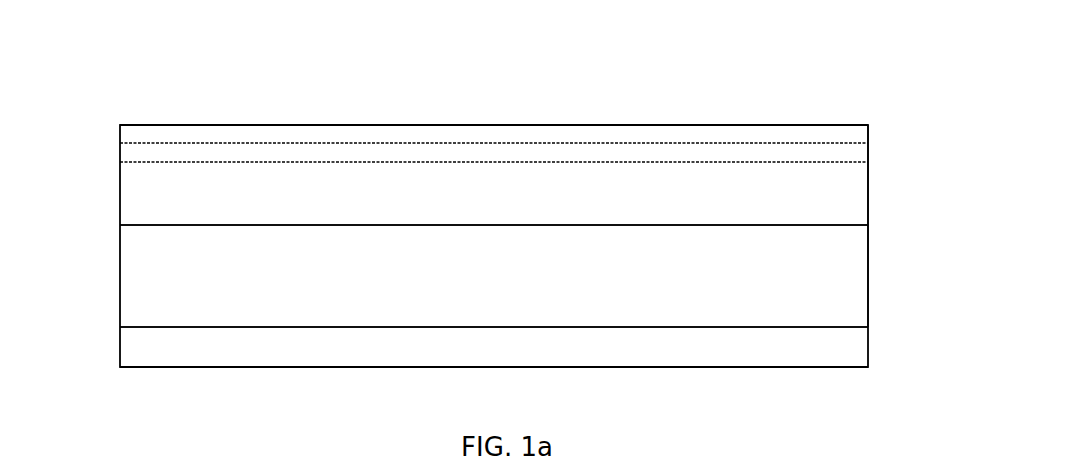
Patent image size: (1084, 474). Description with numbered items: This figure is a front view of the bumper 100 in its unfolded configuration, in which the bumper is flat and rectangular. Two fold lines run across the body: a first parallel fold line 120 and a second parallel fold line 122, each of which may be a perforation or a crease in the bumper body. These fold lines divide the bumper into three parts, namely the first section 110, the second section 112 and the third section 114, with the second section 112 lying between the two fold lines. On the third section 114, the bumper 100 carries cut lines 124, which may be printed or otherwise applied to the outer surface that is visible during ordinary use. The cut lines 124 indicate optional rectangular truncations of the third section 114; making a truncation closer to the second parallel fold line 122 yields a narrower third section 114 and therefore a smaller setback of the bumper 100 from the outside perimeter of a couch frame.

The bumper 100 is at (502, 38).
The first section 110 is at (868, 345).
The second section 112 is at (868, 273).
The third section 114 is at (868, 171).
The first parallel fold line 120 is at (120, 327).
The second parallel fold line 122 is at (120, 226).
The cut lines 124 is at (120, 162).